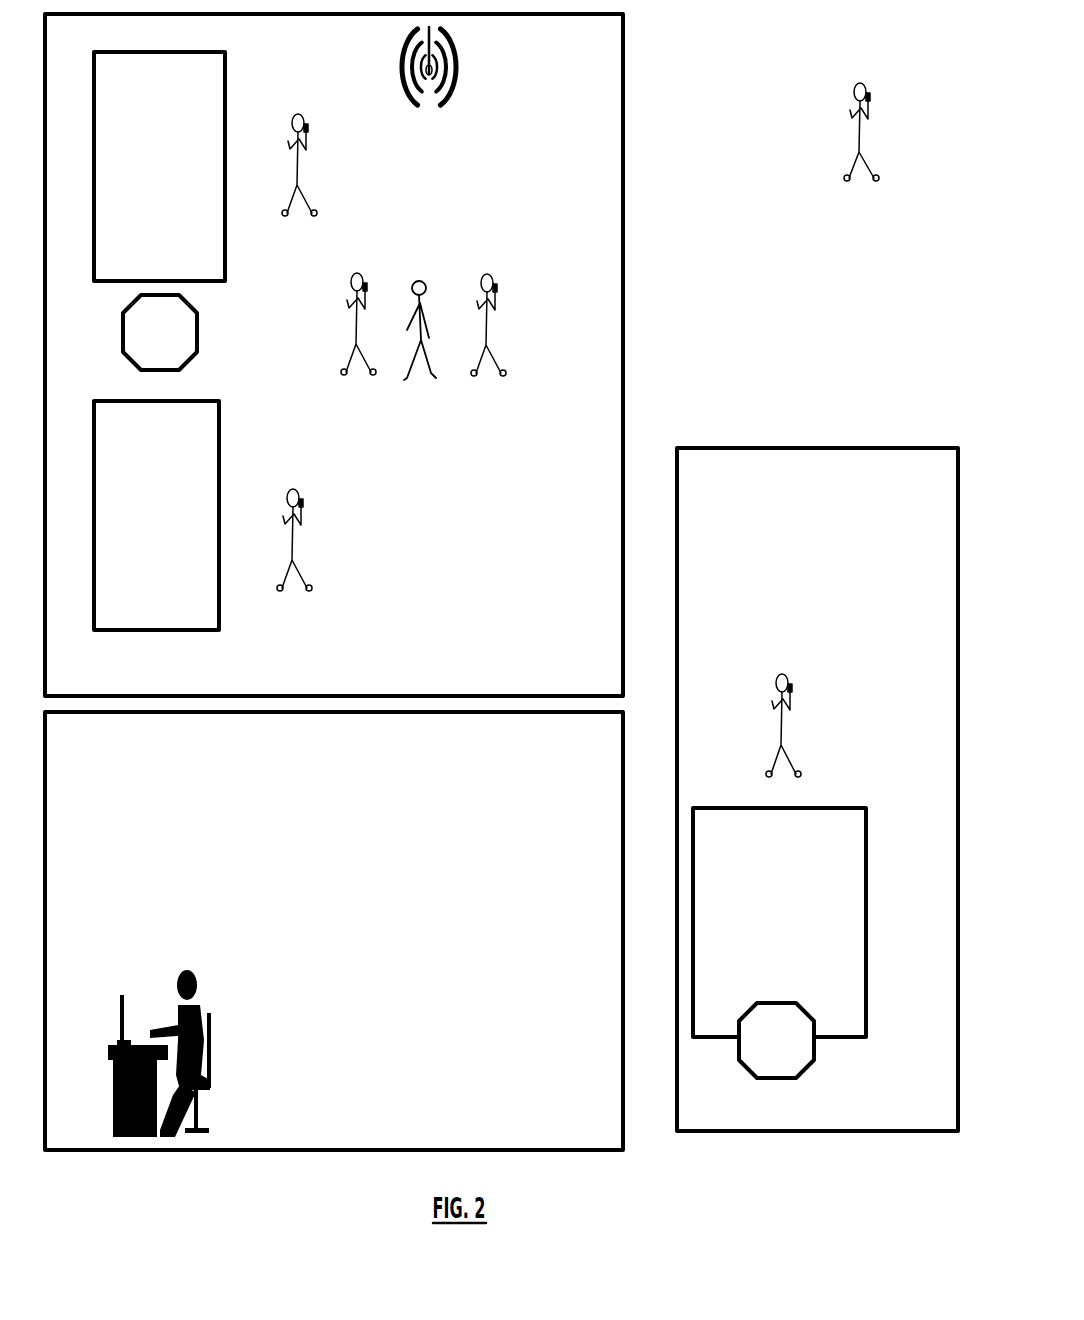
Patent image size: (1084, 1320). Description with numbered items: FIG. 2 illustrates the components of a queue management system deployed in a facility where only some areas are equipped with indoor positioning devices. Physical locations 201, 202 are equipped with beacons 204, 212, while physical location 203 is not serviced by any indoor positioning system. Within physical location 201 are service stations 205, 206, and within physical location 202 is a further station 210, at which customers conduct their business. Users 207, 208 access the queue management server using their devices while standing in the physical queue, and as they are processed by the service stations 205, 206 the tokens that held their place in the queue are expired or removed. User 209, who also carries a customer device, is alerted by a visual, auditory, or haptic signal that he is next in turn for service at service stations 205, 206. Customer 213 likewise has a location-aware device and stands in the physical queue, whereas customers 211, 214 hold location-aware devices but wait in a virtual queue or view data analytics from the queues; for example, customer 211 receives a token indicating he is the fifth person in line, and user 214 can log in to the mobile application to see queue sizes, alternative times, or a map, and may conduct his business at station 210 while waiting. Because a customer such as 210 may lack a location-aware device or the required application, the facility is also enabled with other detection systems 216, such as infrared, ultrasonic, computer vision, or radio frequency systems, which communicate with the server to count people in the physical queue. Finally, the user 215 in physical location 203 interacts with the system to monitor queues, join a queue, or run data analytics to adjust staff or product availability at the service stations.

The physical location 201 is at (334, 355).
The physical location 202 is at (817, 789).
The physical location 203 is at (334, 931).
The beacon 204 is at (160, 332).
The service station 205 is at (156, 515).
The service station 206 is at (159, 166).
The user 207 is at (294, 524).
The user 208 is at (299, 150).
The user 209 is at (358, 309).
The customer / service station 210 is at (635, 640).
The customer 211 is at (488, 309).
The beacon 212 is at (776, 1040).
The customer 213 is at (783, 710).
The user 214 is at (861, 115).
The user 215 is at (159, 1033).
The detection systems 216 is at (429, 82).